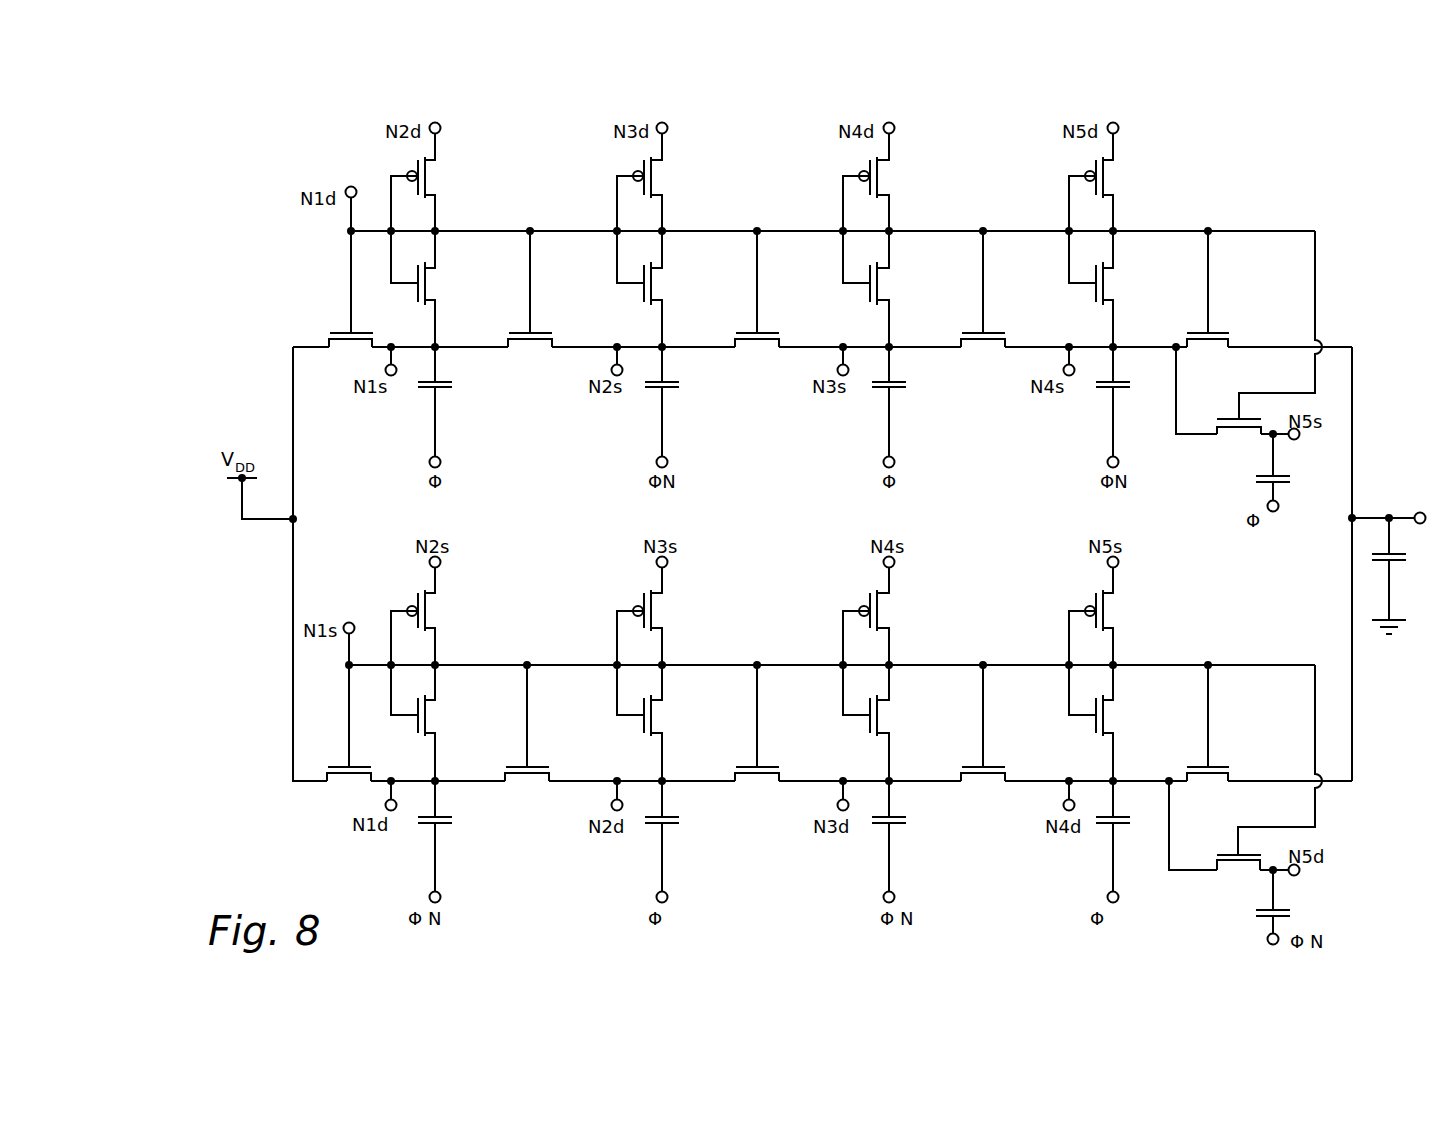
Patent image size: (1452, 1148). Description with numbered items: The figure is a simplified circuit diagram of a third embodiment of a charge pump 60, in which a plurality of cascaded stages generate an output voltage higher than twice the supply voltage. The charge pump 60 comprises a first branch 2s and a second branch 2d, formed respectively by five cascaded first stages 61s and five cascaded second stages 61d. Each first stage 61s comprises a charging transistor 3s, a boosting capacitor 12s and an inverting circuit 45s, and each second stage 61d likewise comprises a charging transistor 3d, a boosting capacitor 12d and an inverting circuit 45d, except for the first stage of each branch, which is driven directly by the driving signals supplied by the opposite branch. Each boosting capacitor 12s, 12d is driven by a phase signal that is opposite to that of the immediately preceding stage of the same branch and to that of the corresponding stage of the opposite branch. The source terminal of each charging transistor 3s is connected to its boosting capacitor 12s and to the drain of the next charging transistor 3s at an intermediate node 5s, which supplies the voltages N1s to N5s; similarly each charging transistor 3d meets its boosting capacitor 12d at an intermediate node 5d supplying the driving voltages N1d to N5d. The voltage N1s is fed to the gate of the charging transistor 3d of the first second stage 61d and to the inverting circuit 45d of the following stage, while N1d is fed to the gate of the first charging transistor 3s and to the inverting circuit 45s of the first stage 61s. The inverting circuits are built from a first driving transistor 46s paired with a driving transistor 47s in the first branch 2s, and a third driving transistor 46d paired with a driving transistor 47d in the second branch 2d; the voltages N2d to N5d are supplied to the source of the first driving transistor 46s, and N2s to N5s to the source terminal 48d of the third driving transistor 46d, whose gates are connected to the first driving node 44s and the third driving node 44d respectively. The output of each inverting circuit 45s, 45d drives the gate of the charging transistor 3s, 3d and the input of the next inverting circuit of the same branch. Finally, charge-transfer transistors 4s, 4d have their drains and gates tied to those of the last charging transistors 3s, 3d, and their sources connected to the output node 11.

The first branch 2s is at (1343, 224).
The second branch 2d is at (274, 698).
The charge pump 60 is at (1388, 338).
The output node 11 is at (1354, 516).
The first driving node 44s is at (344, 191).
The third driving node 44d is at (343, 627).
The source terminal of the third driving transistor 48d is at (441, 130).
The inverting circuit 45s is at (462, 224).
The inverting circuit 45d is at (468, 658).
The first driving transistor 46s is at (437, 172).
The third driving transistor 46d is at (420, 606).
The driving transistor 47s is at (433, 283).
The driving transistor 47d is at (430, 714).
The charging transistor 3s is at (349, 355).
The charging transistor 3d is at (348, 787).
The intermediate node 5s is at (440, 346).
The intermediate node 5d is at (440, 780).
The boosting capacitor 12s is at (453, 385).
The boosting capacitor 12d is at (453, 820).
The charge-transfer transistor 4s is at (1197, 352).
The charge-transfer transistor 4d is at (1230, 782).
The first stage 61s is at (388, 428).
The second stage 61d is at (355, 598).